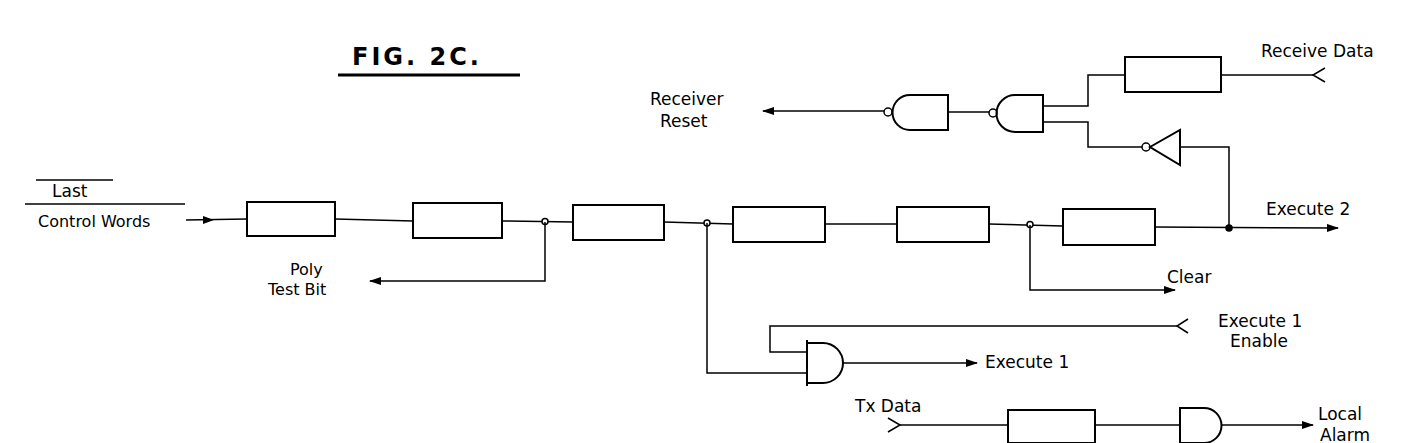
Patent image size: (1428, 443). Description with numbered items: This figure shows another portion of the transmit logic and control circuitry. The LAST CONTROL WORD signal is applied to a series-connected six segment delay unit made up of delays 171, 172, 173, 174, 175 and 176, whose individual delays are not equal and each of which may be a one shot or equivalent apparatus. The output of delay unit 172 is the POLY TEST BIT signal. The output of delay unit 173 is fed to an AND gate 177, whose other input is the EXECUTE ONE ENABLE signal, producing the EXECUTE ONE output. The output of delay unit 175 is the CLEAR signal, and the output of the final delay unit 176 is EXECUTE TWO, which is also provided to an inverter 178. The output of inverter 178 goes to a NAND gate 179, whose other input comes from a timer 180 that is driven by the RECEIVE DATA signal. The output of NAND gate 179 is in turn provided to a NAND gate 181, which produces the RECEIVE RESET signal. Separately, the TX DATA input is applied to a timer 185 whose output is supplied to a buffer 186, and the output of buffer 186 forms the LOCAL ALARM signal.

The delay unit 171 is at (318, 203).
The delay unit 172 is at (480, 204).
The delay unit 173 is at (656, 206).
The delay unit 174 is at (806, 208).
The delay unit 175 is at (970, 208).
The delay unit 176 is at (1142, 212).
The AND gate 177 is at (835, 352).
The inverter 178 is at (1172, 133).
The NAND gate 179 is at (1036, 96).
The timer 180 is at (1200, 62).
The NAND gate 181 is at (930, 98).
The timer 185 is at (1088, 412).
The buffer 186 is at (1205, 420).